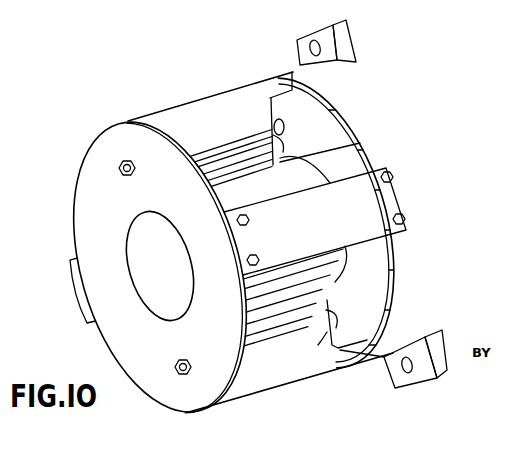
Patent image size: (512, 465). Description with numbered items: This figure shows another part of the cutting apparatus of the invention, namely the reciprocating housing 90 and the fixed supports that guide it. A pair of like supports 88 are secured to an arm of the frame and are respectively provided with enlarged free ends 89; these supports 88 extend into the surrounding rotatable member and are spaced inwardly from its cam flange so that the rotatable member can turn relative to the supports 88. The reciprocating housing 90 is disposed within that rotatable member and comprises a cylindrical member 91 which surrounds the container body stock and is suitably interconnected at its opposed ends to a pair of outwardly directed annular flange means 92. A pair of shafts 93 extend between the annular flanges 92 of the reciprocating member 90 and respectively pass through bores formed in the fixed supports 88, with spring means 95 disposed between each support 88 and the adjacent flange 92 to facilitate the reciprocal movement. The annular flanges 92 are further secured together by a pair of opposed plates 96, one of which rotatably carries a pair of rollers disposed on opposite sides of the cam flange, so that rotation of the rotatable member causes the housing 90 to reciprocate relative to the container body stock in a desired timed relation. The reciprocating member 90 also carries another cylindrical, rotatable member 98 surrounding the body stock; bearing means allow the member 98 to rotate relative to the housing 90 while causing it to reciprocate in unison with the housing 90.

The supports 88 is at (342, 66).
The enlarged free ends 89 is at (240, 160).
The reciprocating housing 90 is at (344, 264).
The cylindrical member 91 is at (332, 152).
The annular flange means 92 is at (348, 118).
The shafts 93 is at (284, 124).
The spring means 95 is at (281, 137).
The plates 96 is at (383, 197).
The rotatable member 98 is at (318, 345).